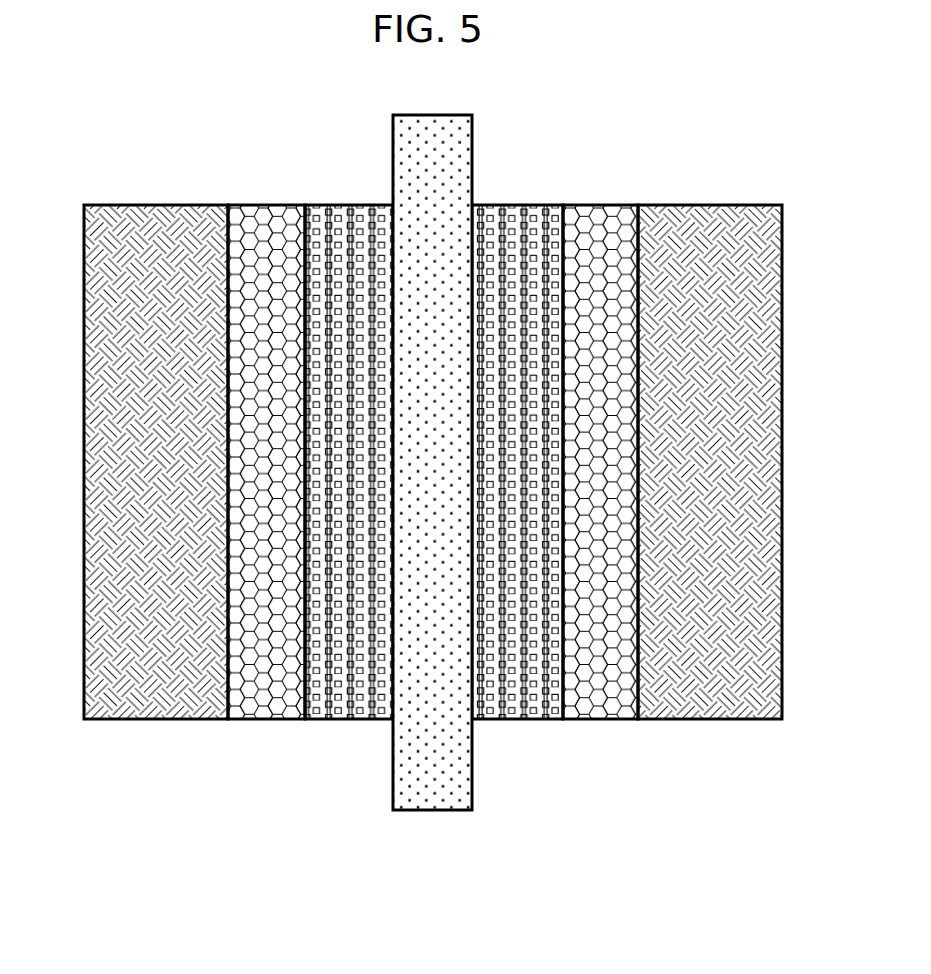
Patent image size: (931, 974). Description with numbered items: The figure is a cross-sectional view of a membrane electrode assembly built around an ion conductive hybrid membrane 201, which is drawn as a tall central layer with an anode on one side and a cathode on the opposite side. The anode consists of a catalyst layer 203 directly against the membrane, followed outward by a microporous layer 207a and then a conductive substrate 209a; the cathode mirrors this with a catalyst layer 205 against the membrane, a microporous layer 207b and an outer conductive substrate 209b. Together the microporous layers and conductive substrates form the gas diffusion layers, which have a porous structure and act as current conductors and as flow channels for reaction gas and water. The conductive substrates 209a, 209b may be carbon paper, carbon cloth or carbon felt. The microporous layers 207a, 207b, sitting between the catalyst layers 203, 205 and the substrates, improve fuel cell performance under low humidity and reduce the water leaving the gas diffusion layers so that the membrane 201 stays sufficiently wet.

The ion conductive hybrid membrane 201 is at (432, 796).
The catalyst layer 203 is at (352, 708).
The catalyst layer 205 is at (517, 708).
The microporous layer 207a is at (265, 707).
The microporous layer 207b is at (605, 708).
The conductive substrate 209a is at (142, 708).
The conductive substrate 209b is at (723, 707).